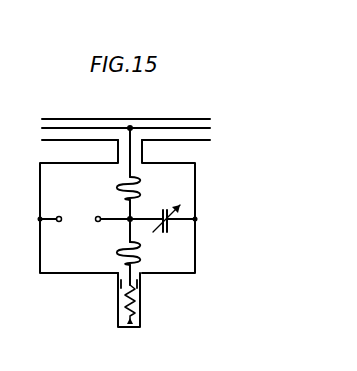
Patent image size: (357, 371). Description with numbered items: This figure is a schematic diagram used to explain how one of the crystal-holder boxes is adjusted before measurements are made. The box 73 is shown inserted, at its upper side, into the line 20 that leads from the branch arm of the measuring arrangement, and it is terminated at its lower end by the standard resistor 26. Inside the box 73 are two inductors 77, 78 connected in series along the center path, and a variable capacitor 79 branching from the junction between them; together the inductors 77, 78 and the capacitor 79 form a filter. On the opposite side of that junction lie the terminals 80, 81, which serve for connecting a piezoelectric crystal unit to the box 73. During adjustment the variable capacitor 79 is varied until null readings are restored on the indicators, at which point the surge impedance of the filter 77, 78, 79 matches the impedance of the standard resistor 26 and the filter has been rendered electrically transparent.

The power supply line 20 is at (126, 117).
The box 73 is at (196, 193).
The inductor 77 is at (123, 185).
The inductor 78 is at (118, 250).
The variable capacitor 79 is at (181, 198).
The terminal 80 is at (60, 223).
The terminal 81 is at (96, 216).
The standard resistor 26 is at (137, 303).